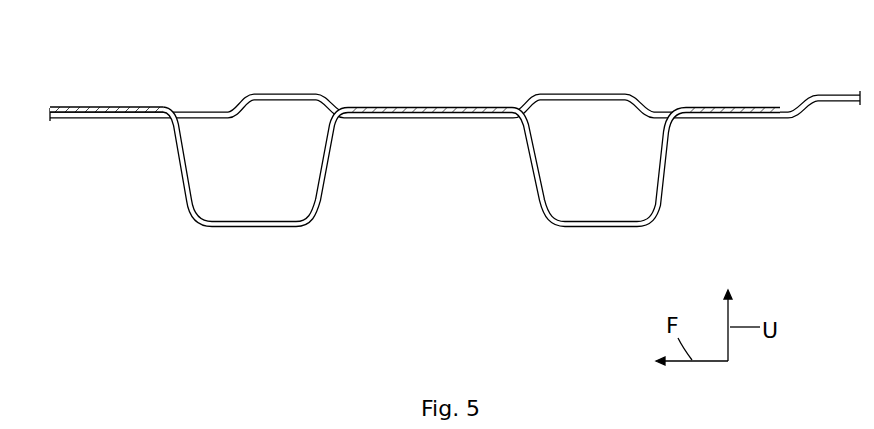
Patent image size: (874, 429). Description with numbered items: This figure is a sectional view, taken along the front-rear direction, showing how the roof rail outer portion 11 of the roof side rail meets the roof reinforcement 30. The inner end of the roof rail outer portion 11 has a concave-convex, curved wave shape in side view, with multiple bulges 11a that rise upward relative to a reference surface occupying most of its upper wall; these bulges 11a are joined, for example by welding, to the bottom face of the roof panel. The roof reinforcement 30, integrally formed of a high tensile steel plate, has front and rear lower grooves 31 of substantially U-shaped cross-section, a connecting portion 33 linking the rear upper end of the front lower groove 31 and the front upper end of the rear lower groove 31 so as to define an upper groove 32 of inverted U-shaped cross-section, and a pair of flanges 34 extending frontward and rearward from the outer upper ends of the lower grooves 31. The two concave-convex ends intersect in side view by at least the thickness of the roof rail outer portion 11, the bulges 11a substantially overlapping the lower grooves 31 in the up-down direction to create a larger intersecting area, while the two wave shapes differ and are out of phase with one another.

The roof rail outer portion 11 is at (197, 111).
The bulges 11a is at (290, 96).
The roof reinforcement 30 is at (185, 208).
The lower grooves 31 is at (255, 228).
The upper groove 32 is at (522, 165).
The connecting portion 33 is at (430, 107).
The flanges 34 is at (98, 106).